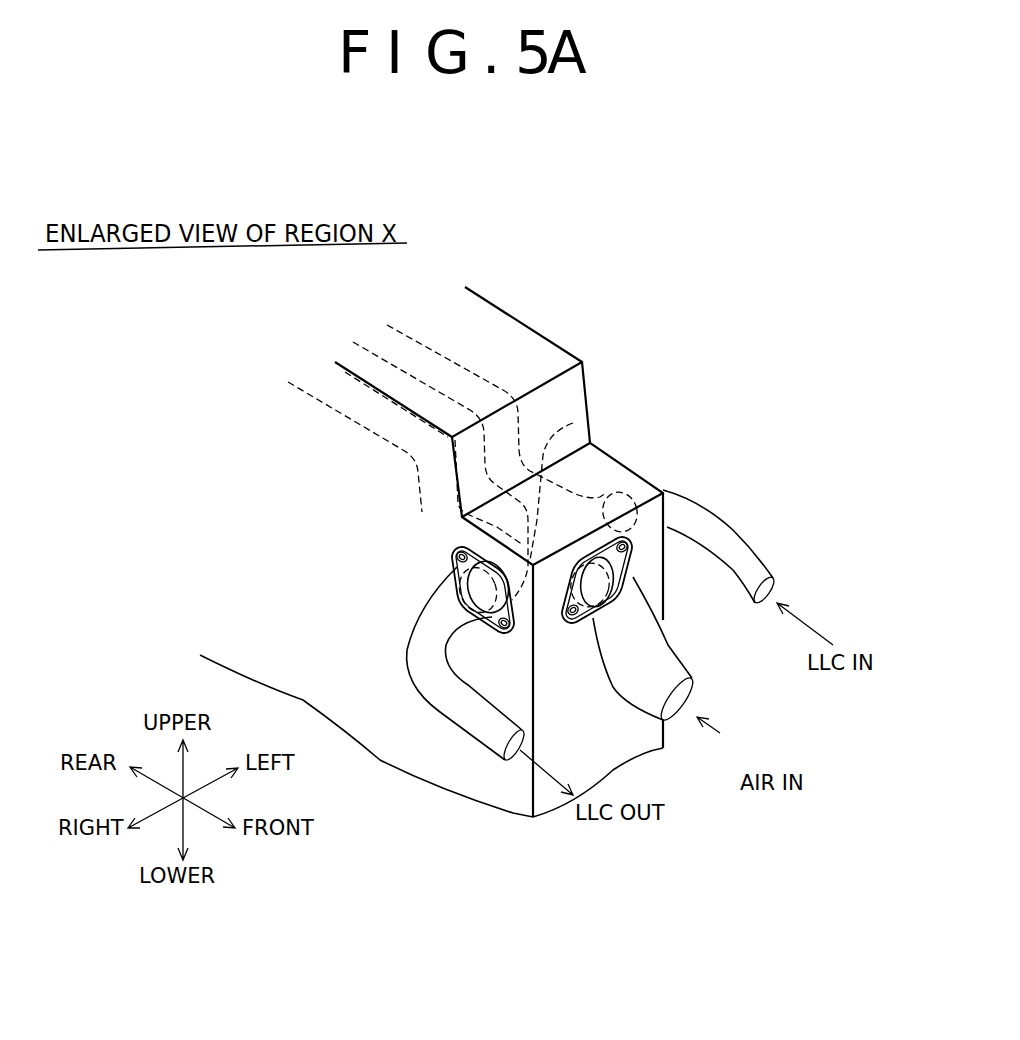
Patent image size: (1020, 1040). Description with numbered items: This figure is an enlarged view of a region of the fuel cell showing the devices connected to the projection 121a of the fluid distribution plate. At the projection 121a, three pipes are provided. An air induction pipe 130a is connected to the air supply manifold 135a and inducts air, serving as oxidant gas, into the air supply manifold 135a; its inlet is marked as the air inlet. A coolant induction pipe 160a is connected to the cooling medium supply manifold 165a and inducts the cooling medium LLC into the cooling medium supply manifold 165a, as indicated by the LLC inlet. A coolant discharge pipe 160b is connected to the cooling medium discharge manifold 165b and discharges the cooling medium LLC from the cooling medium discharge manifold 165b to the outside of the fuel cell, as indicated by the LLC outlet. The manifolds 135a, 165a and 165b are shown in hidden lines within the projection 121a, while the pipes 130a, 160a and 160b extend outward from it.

The projection 121a is at (617, 480).
The air induction pipe 130a is at (627, 680).
The air supply manifold 135a is at (573, 423).
The coolant induction pipe 160a is at (720, 527).
The coolant discharge pipe 160b is at (428, 680).
The cooling medium supply manifold 165a is at (578, 565).
The cooling medium discharge manifold 165b is at (463, 545).